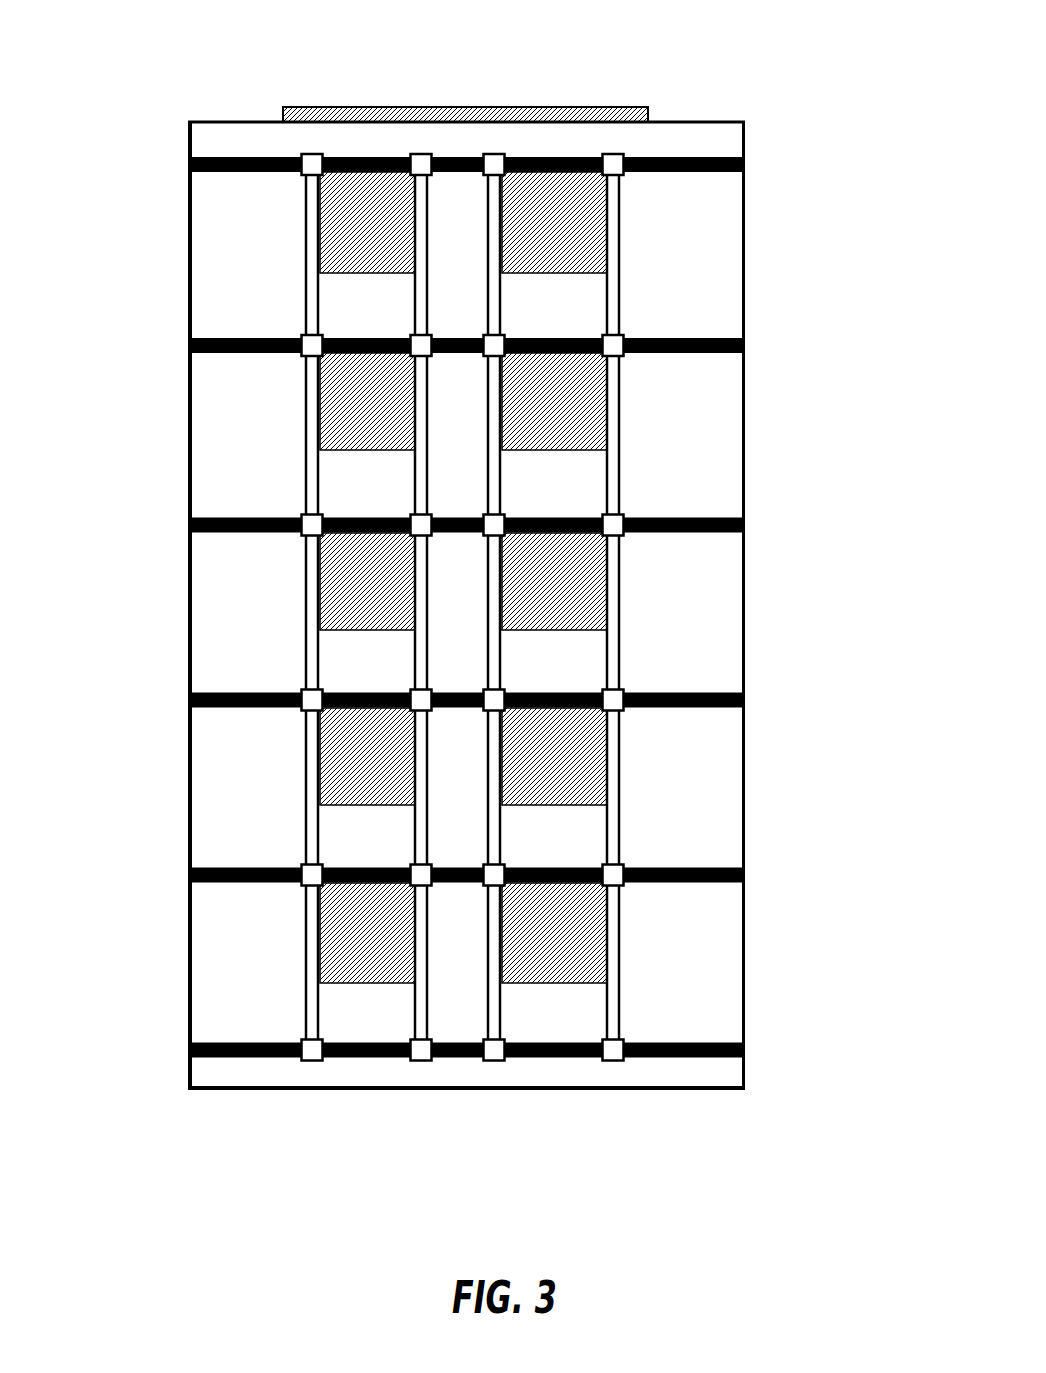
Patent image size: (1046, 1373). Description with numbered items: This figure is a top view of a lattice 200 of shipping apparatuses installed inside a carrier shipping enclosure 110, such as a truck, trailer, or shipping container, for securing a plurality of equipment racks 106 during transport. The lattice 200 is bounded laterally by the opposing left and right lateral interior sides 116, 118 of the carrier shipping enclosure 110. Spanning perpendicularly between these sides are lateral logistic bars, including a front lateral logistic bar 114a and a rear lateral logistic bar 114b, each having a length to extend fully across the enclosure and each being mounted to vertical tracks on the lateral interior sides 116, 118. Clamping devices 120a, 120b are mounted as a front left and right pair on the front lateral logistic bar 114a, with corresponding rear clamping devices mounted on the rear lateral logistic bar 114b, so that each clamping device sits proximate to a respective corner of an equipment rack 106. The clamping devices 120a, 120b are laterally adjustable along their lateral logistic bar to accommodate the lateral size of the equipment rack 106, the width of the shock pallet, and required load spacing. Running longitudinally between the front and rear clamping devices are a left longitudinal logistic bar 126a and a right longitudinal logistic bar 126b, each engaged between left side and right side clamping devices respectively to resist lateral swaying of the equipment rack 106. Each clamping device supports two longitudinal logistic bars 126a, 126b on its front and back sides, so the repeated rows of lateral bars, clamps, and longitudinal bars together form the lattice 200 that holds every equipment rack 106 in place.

The carrier shipping enclosure 110 is at (466, 586).
The front lateral logistic bar 114a is at (693, 157).
The rear lateral logistic bar 114b is at (667, 353).
The left lateral interior side 116 is at (185, 628).
The right lateral interior side 118 is at (740, 635).
The front left clamping device 120a is at (308, 163).
The front right clamping device 120b is at (423, 163).
The left longitudinal logistic bar 126a is at (305, 235).
The right longitudinal logistic bar 126b is at (420, 263).
The equipment rack 106 is at (567, 423).
The lattice 200 is at (627, 278).